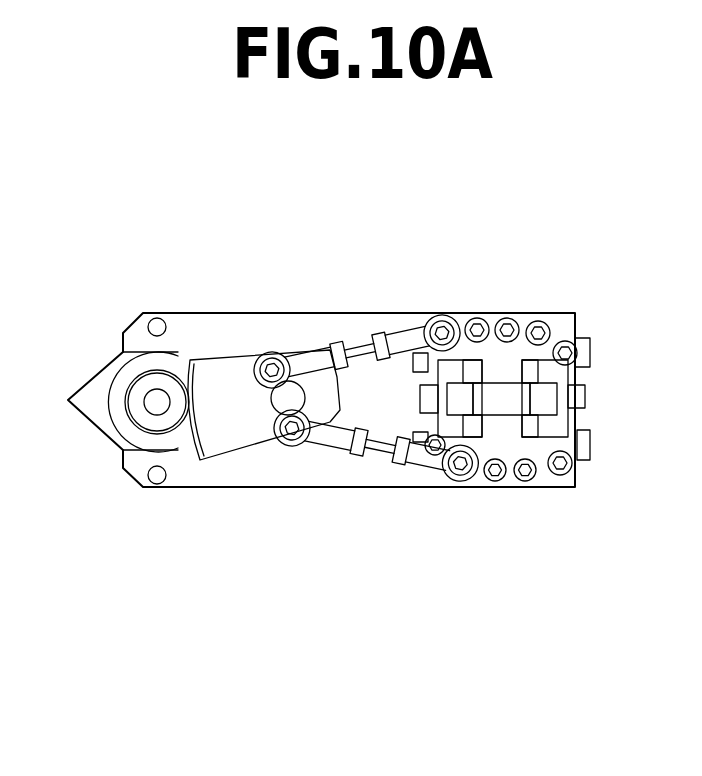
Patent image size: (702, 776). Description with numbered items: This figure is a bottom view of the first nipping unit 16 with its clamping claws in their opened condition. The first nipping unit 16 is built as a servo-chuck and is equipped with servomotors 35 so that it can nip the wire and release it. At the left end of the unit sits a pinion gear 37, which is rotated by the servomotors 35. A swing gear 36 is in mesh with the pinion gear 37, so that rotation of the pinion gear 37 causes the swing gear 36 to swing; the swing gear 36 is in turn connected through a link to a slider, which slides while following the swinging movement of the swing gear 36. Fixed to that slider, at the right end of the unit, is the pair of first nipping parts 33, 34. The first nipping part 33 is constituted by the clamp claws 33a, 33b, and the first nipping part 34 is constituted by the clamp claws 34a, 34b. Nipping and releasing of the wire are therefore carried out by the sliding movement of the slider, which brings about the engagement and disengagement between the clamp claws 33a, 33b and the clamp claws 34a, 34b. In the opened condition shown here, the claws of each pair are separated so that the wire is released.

The first nipping unit 16 is at (245, 275).
The pinion gear 37 is at (178, 380).
The servomotors 35 is at (398, 336).
The swing gear 36 is at (250, 442).
The first nipping part 33 is at (497, 321).
The clamp claw 33a is at (495, 362).
The clamp claw 33b is at (483, 425).
The first nipping part 34 is at (517, 487).
The clamp claw 34a is at (533, 370).
The clamp claw 34b is at (532, 428).